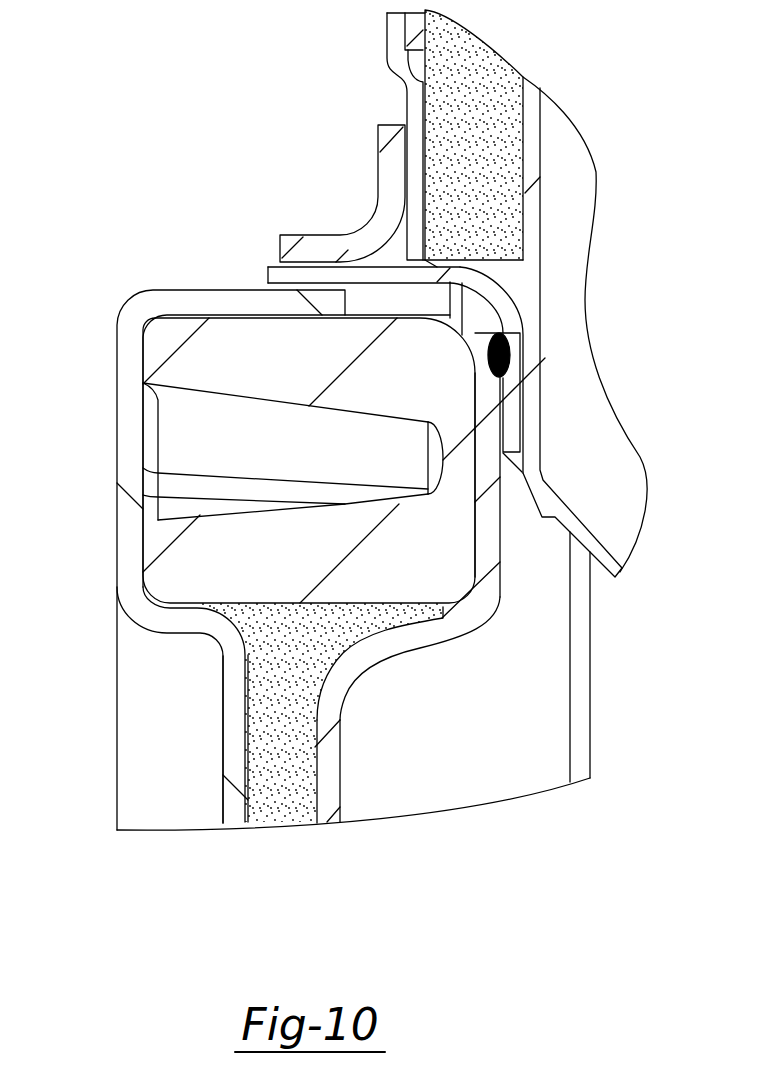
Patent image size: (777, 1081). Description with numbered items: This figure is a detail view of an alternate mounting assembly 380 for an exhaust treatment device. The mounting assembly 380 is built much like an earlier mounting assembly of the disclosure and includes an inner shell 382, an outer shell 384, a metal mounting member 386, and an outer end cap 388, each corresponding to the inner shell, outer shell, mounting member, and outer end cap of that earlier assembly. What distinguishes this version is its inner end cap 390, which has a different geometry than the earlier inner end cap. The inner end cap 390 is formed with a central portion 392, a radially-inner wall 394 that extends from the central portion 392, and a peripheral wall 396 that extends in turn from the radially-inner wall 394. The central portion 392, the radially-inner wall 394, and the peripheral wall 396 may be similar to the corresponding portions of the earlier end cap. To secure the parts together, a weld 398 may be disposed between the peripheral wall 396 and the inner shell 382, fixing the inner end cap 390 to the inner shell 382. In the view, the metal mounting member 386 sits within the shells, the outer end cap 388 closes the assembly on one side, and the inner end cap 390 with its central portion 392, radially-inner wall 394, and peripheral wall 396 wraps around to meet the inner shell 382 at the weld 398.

The mounting assembly 380 is at (140, 316).
The inner shell 382 is at (368, 277).
The outer shell 384 is at (290, 243).
The metal mounting member 386 is at (182, 566).
The outer end cap 388 is at (228, 728).
The inner end cap 390 is at (337, 690).
The central portion 392 is at (332, 792).
The radially-inner wall 394 is at (400, 648).
The peripheral wall 396 is at (485, 547).
The weld 398 is at (510, 357).